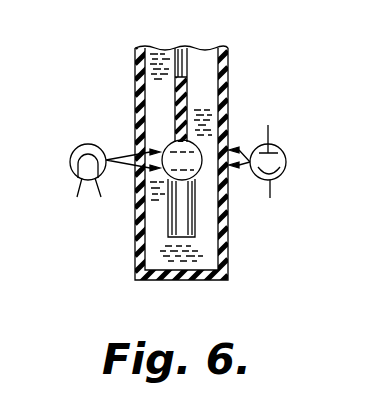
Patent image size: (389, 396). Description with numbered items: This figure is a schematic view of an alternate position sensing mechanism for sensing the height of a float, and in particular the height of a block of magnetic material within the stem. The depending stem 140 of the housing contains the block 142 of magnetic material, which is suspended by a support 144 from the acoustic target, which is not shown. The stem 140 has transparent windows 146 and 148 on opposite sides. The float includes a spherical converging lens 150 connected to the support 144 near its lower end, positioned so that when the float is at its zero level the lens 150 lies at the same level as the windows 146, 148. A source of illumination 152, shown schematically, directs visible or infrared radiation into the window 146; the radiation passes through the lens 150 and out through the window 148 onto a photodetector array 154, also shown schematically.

The depending stem 140 is at (228, 78).
The block of magnetic material 142 is at (168, 215).
The support 144 is at (186, 80).
The transparent window 146 is at (150, 152).
The transparent window 148 is at (240, 148).
The spherical converging lens 150 is at (186, 168).
The source of illumination 152 is at (70, 160).
The photodetector array 154 is at (288, 158).